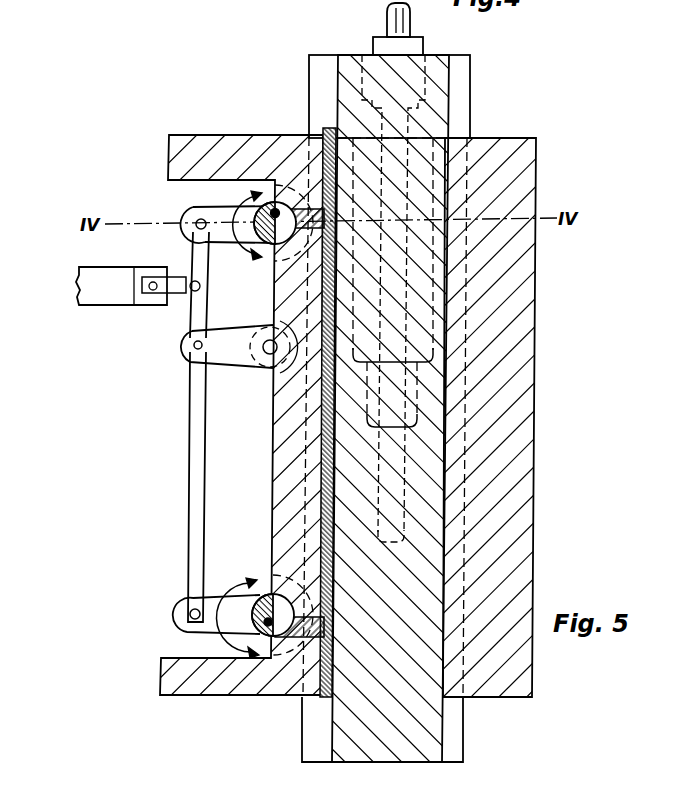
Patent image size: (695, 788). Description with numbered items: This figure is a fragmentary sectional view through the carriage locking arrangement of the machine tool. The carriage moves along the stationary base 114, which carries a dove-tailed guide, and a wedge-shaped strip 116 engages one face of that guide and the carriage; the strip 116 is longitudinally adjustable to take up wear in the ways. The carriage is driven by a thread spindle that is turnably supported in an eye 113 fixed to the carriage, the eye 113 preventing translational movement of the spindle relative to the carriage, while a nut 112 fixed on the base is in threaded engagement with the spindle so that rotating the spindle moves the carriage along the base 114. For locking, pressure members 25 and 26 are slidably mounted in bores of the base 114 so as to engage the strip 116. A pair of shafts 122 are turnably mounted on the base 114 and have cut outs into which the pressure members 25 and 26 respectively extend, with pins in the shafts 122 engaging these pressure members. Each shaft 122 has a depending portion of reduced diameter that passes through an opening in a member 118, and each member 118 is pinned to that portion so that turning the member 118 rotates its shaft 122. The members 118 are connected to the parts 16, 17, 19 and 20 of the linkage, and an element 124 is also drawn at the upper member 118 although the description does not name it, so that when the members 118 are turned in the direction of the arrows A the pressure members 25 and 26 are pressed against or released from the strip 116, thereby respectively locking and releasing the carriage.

The part 16 is at (102, 282).
The part 17 is at (198, 302).
The part 19 is at (232, 358).
The part 20 is at (203, 471).
The pressure member 25 is at (268, 194).
The pressure member 26 is at (260, 638).
The nut 112 is at (412, 393).
The eye 113 is at (418, 78).
The stationary base 114 is at (522, 288).
The wedge-shaped strip 116 is at (323, 425).
The member 118 is at (200, 218).
The shaft 122 is at (240, 231).
The clamping lever 124 is at (225, 217).